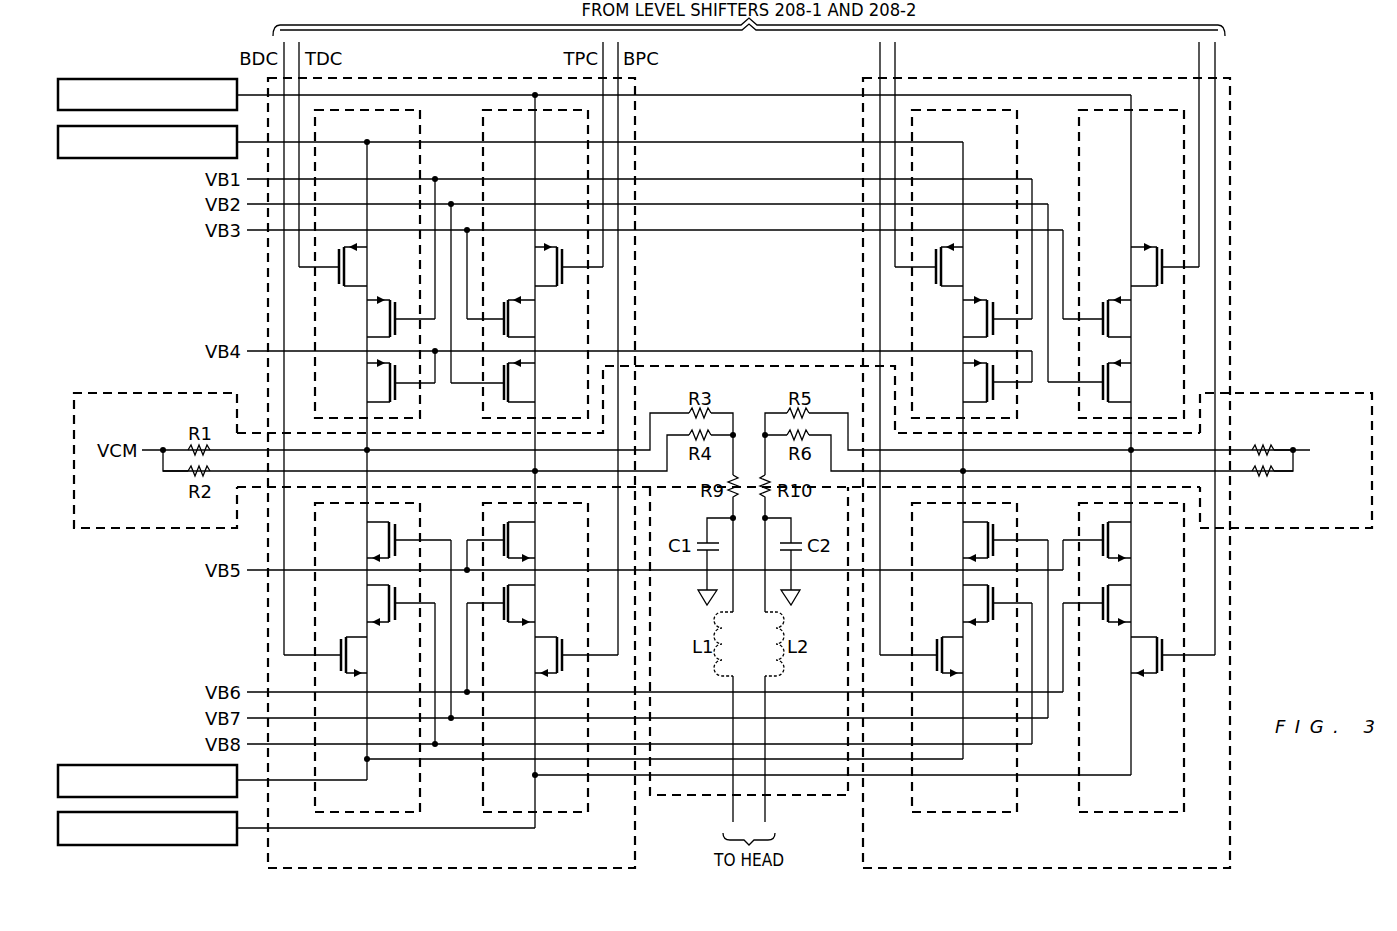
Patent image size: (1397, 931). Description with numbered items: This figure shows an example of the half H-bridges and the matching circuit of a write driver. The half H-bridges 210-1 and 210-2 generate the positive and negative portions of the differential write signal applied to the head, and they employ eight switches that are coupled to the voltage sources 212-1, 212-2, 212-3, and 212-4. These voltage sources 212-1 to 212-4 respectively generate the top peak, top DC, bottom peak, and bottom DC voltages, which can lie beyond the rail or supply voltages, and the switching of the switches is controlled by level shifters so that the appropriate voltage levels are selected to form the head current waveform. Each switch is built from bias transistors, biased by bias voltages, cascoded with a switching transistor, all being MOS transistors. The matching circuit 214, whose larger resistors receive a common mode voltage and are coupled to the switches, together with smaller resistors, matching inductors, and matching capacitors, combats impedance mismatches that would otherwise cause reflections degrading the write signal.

The voltage source 212-1 is at (142, 79).
The voltage source 212-2 is at (143, 159).
The voltage source 212-3 is at (142, 765).
The voltage source 212-4 is at (163, 845).
The half H-bridge 210-1 is at (555, 853).
The half H-bridge 210-2 is at (1153, 853).
The matching circuit 214 is at (1305, 390).